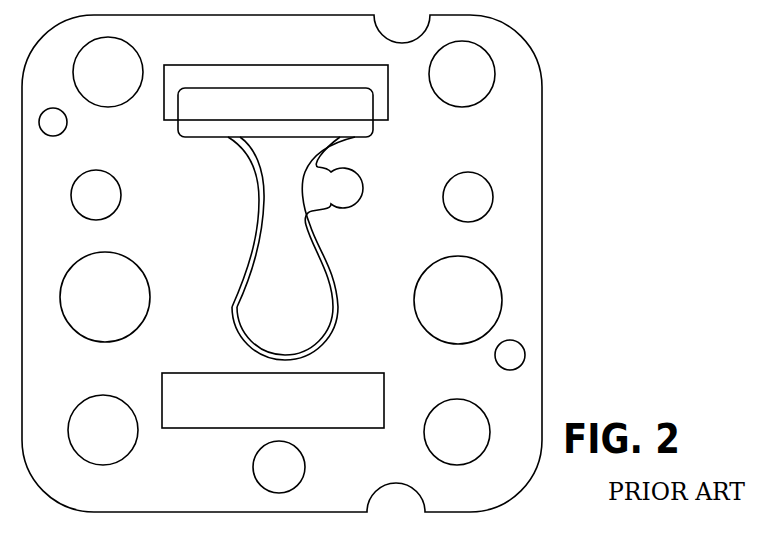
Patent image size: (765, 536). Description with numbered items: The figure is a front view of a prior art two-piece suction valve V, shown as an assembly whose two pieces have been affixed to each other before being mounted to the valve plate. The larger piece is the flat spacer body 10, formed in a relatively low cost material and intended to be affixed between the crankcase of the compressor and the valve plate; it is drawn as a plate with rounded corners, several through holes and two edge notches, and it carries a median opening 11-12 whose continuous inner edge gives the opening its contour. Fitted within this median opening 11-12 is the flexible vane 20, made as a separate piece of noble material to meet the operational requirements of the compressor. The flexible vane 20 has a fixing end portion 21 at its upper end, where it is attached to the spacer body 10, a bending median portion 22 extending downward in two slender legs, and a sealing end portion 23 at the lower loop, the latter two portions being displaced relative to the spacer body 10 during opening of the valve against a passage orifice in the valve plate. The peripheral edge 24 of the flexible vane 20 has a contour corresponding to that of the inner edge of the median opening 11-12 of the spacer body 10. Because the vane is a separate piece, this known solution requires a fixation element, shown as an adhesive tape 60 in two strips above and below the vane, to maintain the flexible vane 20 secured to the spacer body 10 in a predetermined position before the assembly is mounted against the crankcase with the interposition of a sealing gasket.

The spacer body 10 is at (517, 192).
The adhesive tape 60 is at (328, 79).
The flexible vane 20 is at (283, 201).
The fixing end portion 21 is at (198, 107).
The bending median portion 22 is at (282, 197).
The sealing end portion 23 is at (287, 338).
The peripheral edge 24 is at (303, 182).
The median opening and continuous inner edge 11-12 is at (256, 342).
The suction valve V is at (552, 125).